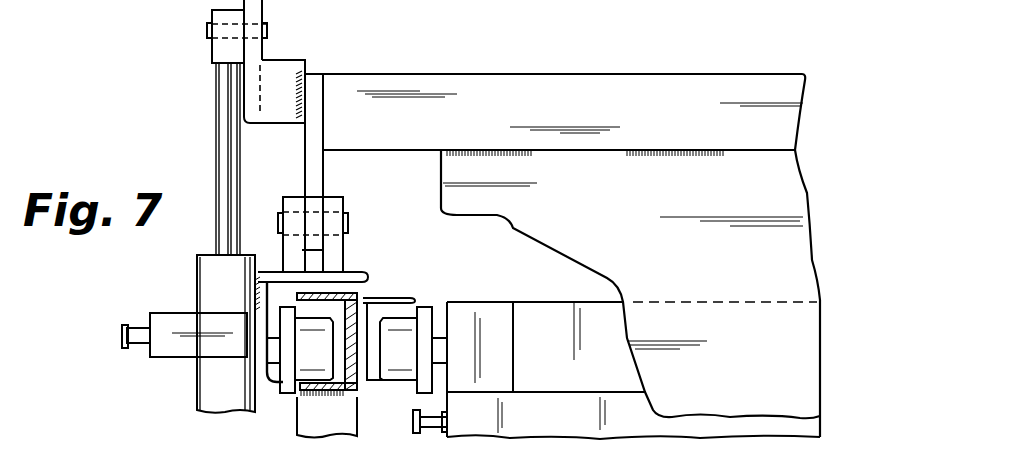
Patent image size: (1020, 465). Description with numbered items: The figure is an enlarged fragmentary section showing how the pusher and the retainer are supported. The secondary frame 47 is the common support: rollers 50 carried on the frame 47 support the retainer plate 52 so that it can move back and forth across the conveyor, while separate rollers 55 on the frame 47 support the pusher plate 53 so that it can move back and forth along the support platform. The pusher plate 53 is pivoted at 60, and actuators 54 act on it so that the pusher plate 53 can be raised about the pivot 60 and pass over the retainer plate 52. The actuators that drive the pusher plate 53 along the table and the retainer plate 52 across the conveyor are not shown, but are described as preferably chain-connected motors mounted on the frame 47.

The secondary frame 47 is at (307, 421).
The rollers 50 is at (407, 320).
The retainer plate 52 is at (628, 413).
The pusher plate 53 is at (812, 215).
The actuators 54 is at (207, 382).
The rollers 55 is at (335, 365).
The pivot 60 is at (347, 226).